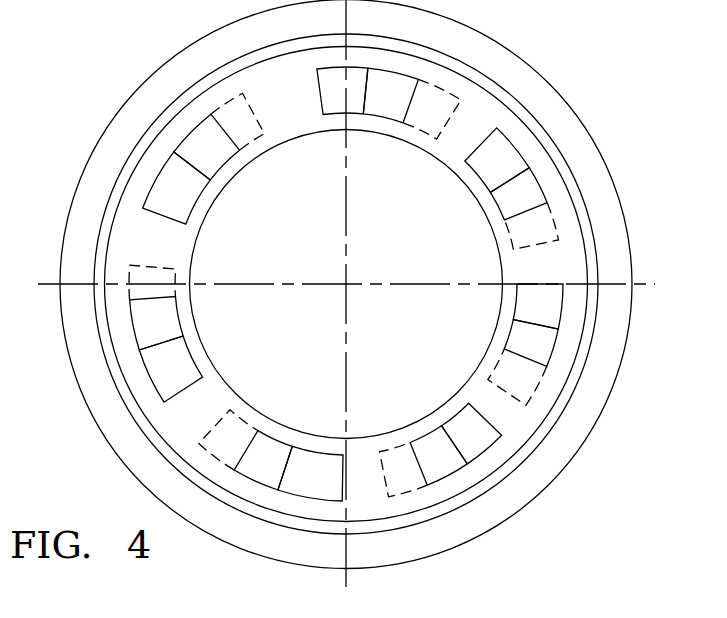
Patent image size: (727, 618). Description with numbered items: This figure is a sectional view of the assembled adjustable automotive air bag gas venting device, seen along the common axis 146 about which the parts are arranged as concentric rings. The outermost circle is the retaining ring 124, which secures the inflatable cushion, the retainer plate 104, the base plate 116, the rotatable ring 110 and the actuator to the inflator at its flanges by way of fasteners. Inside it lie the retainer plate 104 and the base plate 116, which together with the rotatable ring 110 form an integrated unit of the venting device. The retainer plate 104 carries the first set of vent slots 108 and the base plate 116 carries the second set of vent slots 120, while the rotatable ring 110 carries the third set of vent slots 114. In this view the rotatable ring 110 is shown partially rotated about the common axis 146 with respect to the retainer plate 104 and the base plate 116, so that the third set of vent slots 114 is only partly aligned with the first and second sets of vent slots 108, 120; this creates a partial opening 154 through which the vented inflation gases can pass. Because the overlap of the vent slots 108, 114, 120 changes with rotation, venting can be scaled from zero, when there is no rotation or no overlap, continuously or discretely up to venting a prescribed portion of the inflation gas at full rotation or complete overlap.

The retaining ring 124 is at (532, 68).
The retainer plate 104 is at (394, 303).
The rotatable ring 110 is at (394, 303).
The base plate 116 is at (445, 505).
The common axis 146 is at (346, 284).
The partial opening 154 is at (502, 157).
The third set of vent slots 114 is at (533, 197).
The first set of vent slots 108 is at (566, 452).
The second set of vent slots 120 is at (473, 432).